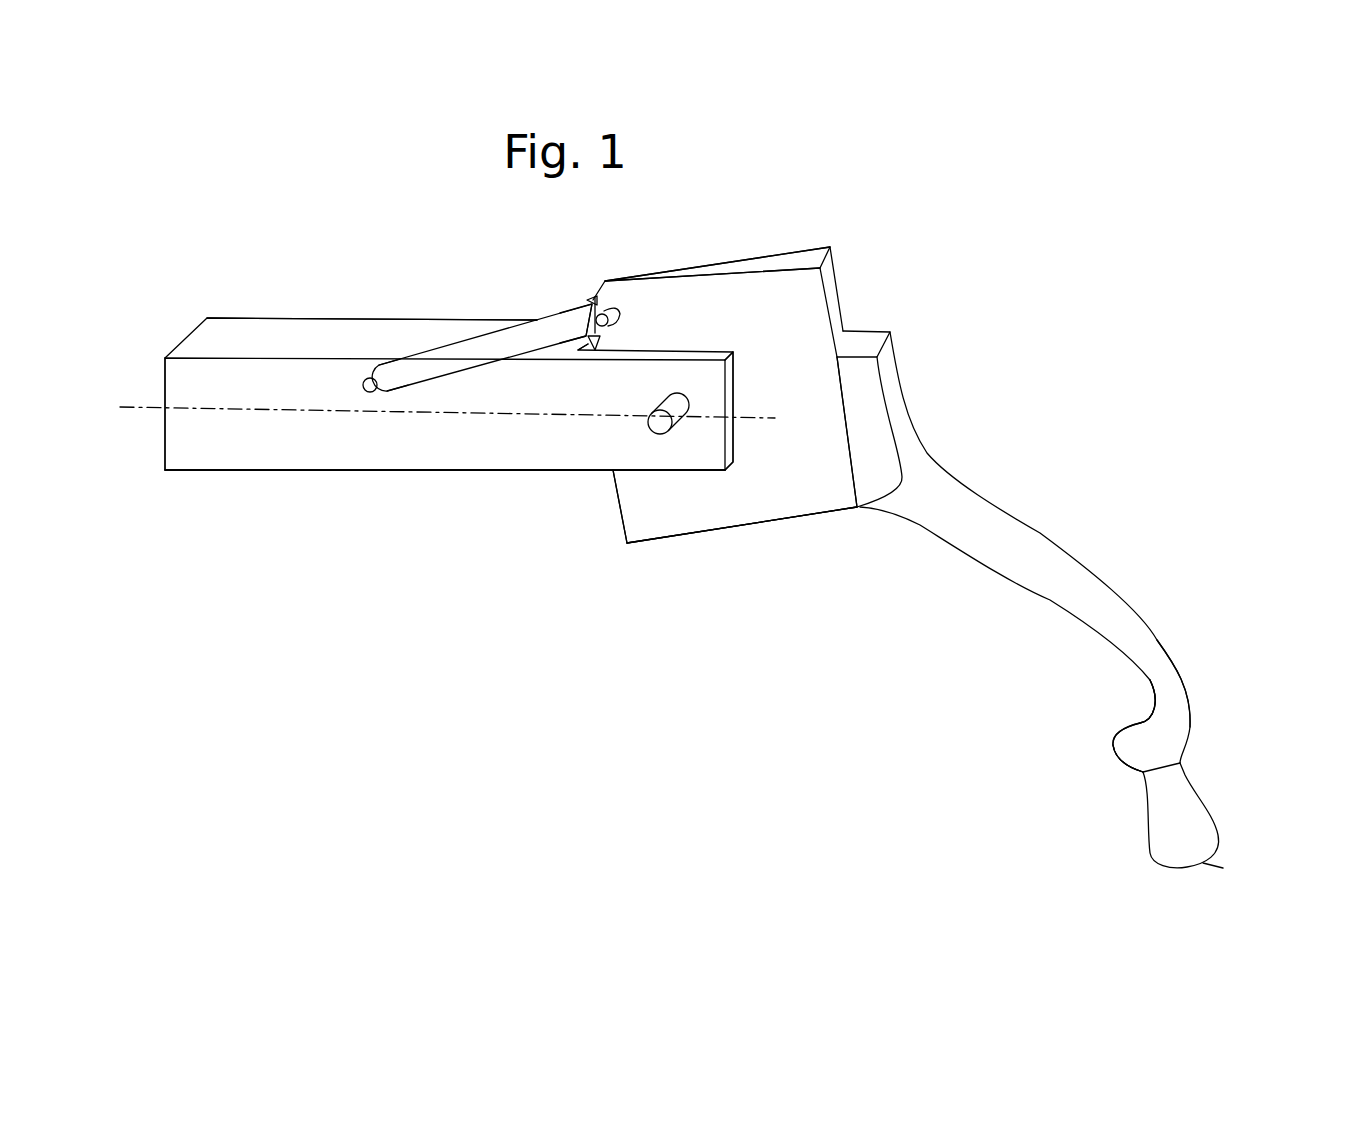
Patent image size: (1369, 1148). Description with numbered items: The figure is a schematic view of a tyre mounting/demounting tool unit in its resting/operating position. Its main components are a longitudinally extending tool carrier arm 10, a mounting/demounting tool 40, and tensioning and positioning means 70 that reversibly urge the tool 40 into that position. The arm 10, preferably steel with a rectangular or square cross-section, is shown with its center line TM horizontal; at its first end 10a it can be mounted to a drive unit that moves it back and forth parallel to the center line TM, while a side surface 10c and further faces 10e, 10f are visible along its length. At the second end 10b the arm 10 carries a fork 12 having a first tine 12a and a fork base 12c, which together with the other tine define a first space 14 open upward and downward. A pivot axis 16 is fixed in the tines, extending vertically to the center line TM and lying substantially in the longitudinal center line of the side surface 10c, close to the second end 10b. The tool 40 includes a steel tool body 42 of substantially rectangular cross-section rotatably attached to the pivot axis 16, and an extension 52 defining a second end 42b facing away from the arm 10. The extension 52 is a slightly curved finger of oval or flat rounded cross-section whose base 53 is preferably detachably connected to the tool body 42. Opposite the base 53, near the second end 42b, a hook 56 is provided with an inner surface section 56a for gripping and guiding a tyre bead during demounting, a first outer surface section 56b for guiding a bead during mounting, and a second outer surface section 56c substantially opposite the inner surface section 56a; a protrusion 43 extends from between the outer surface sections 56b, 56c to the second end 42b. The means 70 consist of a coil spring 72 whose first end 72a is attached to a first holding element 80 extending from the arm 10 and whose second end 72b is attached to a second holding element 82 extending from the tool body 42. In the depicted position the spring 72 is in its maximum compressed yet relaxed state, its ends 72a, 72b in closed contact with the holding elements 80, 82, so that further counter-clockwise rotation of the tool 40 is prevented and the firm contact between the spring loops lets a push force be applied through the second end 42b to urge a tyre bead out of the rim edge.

The tool carrier arm 10 is at (449, 394).
The first end 10a is at (158, 460).
The second end 10b is at (737, 430).
The side surface 10c is at (228, 452).
The top face of body 10e is at (272, 332).
The bottom edge of body 10f is at (338, 477).
The fork 12 is at (690, 452).
The first tine 12a is at (667, 452).
The fork base 12c is at (558, 355).
The first space 14 is at (592, 340).
The pivot axis 16 is at (651, 431).
The mounting/demounting tool 40 is at (725, 395).
The tool body 42 is at (731, 262).
The second end 42b is at (1223, 868).
The protrusion 43 is at (1178, 792).
The extension 52 is at (997, 520).
The base 53 is at (893, 368).
The hook 56 is at (1113, 743).
The inner surface section 56a is at (1130, 701).
The first outer surface section 56b is at (1114, 781).
The second outer surface section 56c is at (1210, 708).
The tensioning and positioning means 70 is at (400, 230).
The coil spring 72 is at (470, 358).
The first end 72a is at (402, 363).
The second end 72b is at (570, 320).
The first holding element 80 is at (366, 378).
The second holding element 82 is at (595, 297).
The center line TM is at (140, 397).